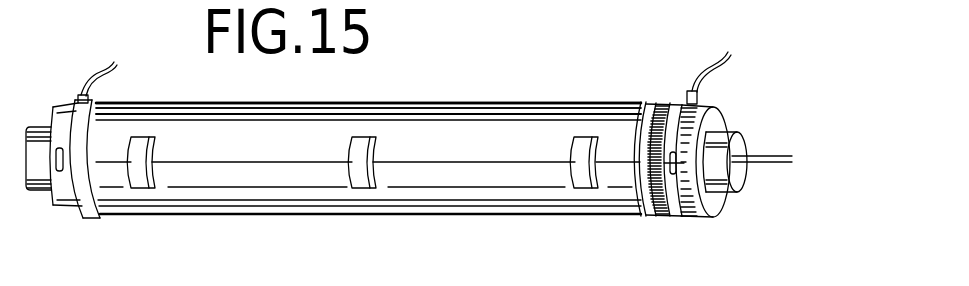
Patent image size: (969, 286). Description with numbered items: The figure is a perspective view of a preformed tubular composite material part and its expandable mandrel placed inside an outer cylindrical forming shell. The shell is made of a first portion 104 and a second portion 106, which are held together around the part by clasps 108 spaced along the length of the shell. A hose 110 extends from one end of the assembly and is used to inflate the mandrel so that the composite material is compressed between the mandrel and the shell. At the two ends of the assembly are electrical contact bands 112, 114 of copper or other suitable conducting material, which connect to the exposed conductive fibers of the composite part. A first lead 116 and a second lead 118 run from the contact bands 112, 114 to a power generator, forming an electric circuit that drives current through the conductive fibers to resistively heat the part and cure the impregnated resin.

The first portion 104 is at (457, 217).
The second portion 106 is at (424, 106).
The clasps 108 is at (150, 137).
The hose 110 is at (765, 152).
The electrical contact band 112 is at (62, 190).
The electrical contact band 114 is at (687, 213).
The first lead 116 is at (106, 68).
The second lead 118 is at (722, 65).